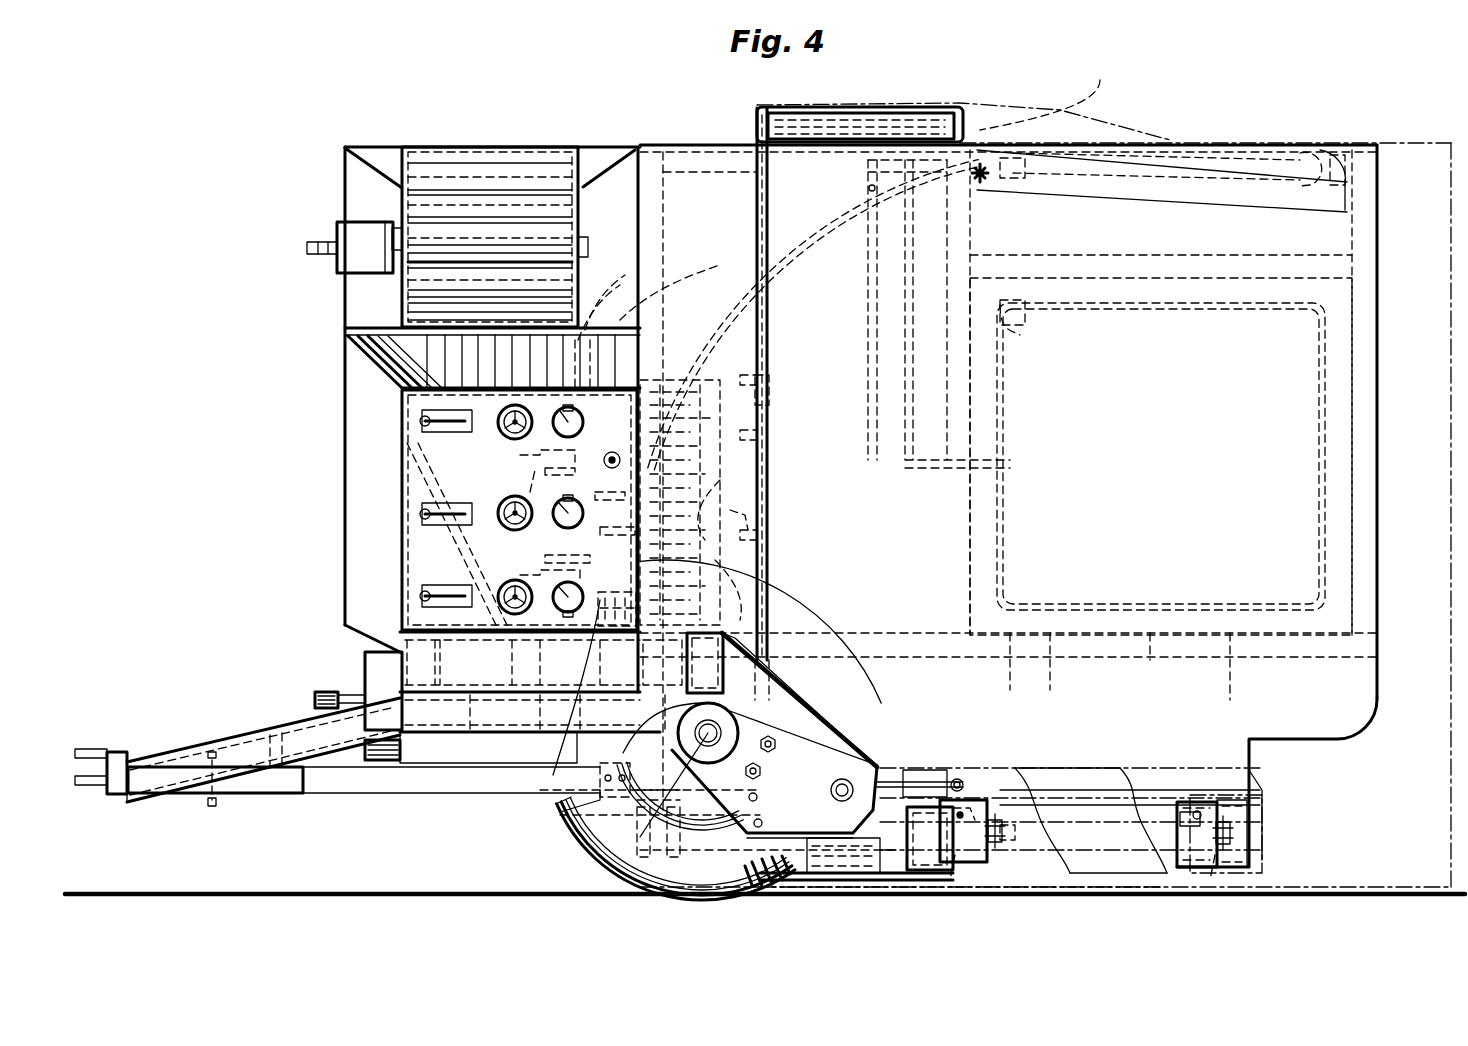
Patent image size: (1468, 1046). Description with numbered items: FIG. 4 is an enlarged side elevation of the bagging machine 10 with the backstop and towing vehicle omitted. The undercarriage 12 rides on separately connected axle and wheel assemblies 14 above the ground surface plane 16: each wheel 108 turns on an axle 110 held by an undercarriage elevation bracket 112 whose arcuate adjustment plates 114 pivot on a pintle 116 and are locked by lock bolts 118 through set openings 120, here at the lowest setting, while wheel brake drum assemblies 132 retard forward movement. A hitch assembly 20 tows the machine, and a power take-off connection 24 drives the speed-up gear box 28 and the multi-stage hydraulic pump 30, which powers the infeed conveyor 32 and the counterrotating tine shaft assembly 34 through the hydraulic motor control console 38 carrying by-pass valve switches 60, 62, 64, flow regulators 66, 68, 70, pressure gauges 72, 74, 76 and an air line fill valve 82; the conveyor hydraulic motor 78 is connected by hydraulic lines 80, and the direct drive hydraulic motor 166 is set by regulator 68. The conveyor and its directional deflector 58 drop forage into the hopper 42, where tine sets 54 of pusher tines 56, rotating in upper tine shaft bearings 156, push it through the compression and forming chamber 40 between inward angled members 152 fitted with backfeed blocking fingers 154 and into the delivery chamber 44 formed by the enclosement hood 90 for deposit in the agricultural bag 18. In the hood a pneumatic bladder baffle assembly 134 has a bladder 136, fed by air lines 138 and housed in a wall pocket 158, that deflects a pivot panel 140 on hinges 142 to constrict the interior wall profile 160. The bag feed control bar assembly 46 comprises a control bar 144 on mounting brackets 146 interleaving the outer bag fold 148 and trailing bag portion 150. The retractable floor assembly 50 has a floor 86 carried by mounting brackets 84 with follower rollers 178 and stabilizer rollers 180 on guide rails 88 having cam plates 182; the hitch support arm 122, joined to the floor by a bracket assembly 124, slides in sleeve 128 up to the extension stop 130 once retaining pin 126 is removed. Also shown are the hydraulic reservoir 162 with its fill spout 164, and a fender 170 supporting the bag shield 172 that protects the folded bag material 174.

The machine 10 is at (235, 102).
The undercarriage 12 is at (485, 768).
The separately connected axle and wheel assemblies 14 is at (840, 705).
The supporting ground surface plane 16 is at (185, 892).
The agricultural bag 18 is at (1045, 110).
The undercarriage hitch assembly 20 is at (103, 762).
The power take-off connection 24 is at (328, 692).
The speed-up gear box 28 is at (375, 672).
The multi-stage hydraulic pump 30 is at (435, 765).
The infeed conveyor 32 is at (345, 290).
The counterrotating tine shaft assembly 34 is at (630, 310).
The hydraulic motor control console 38 is at (345, 500).
The feed material compression and forming chamber 40 is at (680, 422).
The hopper 42 is at (362, 365).
The delivery chamber 44 is at (768, 535).
The bag feed control bar assembly 46 is at (775, 335).
The delivery chamber retractable floor assembly 50 is at (1272, 857).
The counterrotating tine sets 54 is at (470, 482).
The pusher tines 56 is at (540, 460).
The infeed conveyor directional deflector 58 is at (478, 147).
The pump on-off by-pass valve switch 60 is at (420, 421).
The pump on-off by-pass valve switch 62 is at (420, 514).
The pump on-off by-pass valve switch 64 is at (420, 596).
The pump flow regulator 66 is at (505, 434).
The pump flow regulator 68 is at (505, 527).
The pump flow regulator 70 is at (503, 585).
The pump pressure gauge 72 is at (583, 425).
The pump pressure gauge 74 is at (560, 526).
The pump pressure gauge 76 is at (560, 608).
The infeed conveyor hydraulic motor 78 is at (368, 230).
The hydraulic lines 80 is at (316, 242).
The air line fill valve 82 is at (612, 452).
The retractable floor assembly mounting bracket 84 is at (975, 878).
The retractable floor 86 is at (1000, 860).
The guide rails 88 is at (1155, 815).
The enclosement hood 90 is at (1085, 145).
The wheels 108 is at (585, 832).
The axles 110 is at (704, 740).
The undercarriage elevation brackets 112 is at (820, 735).
The arcuate adjustment plates 114 is at (765, 680).
The pintle 116 is at (842, 800).
The lock bolts 118 is at (770, 738).
The bracket adjustment set openings 120 is at (750, 862).
The undercarriage hitch assembly support arm 122 is at (380, 780).
The bracket assembly 124 is at (588, 852).
The hitch assembly support arm retaining pin 126 is at (210, 800).
The hitch assembly support arm sleeve 128 is at (292, 793).
The retractable floor extension stop 130 is at (590, 812).
The wheel brake drum assemblies 132 is at (625, 905).
The pneumatic bladder baffle assemblies 134 is at (1205, 130).
The pneumatic bladders 136 is at (1260, 160).
The air lines 138 is at (868, 238).
The pivot panels 140 is at (1240, 185).
The hinges 142 is at (985, 185).
The bag feed control bar 144 is at (768, 408).
The feed control bar mounting brackets 146 is at (870, 118).
The outer bag fold 148 is at (808, 118).
The trailing bag portion 150 is at (960, 103).
The inward angled members 152 is at (760, 494).
The backfeed blocking fingers 154 is at (760, 380).
The upper tine shaft bearings 156 is at (630, 280).
The wall pocket 158 is at (1345, 160).
The delivery chamber interior wall profile 160 is at (790, 262).
The hydraulic system reservoir 162 is at (885, 737).
The fill spout 164 is at (600, 596).
The direct drive hydraulic motor 166 is at (615, 748).
The retractable floor assembly fender 170 is at (1070, 772).
The bag shield 172 is at (852, 880).
The folded bag material 174 is at (880, 885).
The horizontal guide rail follower roller 178 is at (985, 810).
The vertical guide rail stabilizer roller 180 is at (1005, 828).
The cam plate 182 is at (958, 900).